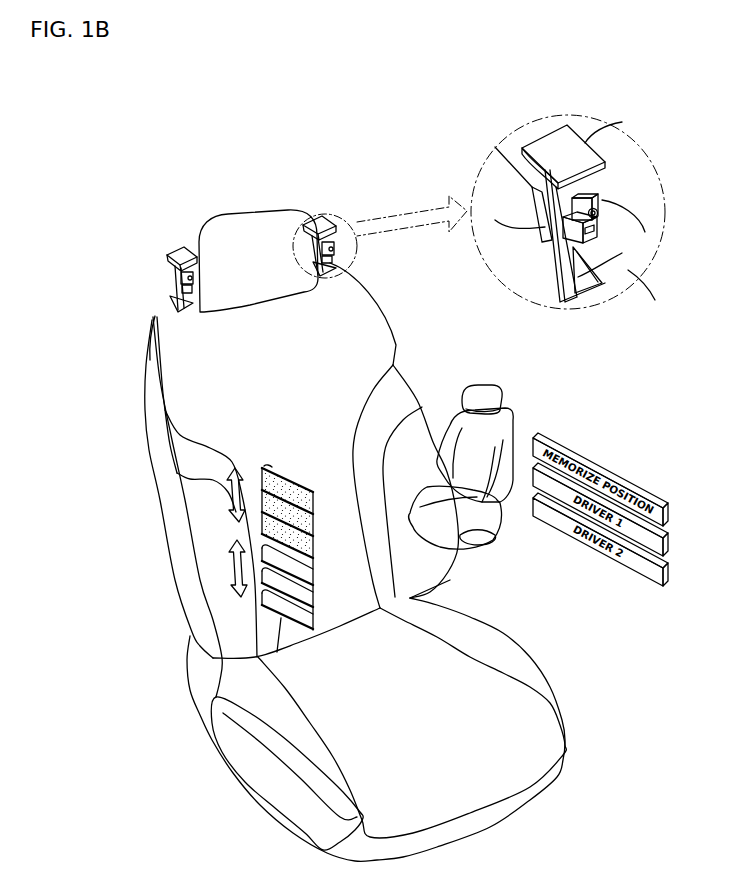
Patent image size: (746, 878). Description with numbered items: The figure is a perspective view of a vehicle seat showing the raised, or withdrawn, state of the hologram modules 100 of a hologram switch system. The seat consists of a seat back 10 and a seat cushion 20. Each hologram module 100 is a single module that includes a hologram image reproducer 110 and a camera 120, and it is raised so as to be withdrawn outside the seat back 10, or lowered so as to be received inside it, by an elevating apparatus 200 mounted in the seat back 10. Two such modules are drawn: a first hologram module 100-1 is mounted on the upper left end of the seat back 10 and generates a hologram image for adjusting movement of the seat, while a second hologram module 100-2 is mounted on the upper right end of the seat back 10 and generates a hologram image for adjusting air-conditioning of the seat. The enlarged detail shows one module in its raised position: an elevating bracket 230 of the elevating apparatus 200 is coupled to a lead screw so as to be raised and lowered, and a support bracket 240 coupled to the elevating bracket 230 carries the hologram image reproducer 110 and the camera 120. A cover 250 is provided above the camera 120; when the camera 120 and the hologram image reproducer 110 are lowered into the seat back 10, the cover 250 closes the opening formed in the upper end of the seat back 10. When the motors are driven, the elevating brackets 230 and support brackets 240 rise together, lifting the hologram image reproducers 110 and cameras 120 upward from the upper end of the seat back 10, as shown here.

The seat back 10 is at (177, 397).
The seat cushion 20 is at (500, 712).
The hologram module 100 is at (240, 213).
The first hologram module 100-1 is at (290, 212).
The second hologram module 100-2 is at (178, 246).
The hologram image reproducer 110 is at (600, 228).
The camera 120 is at (600, 212).
The elevating apparatus 200 is at (155, 311).
The elevating bracket 230 is at (170, 293).
The support bracket 240 is at (173, 272).
The cover 250 is at (177, 253).